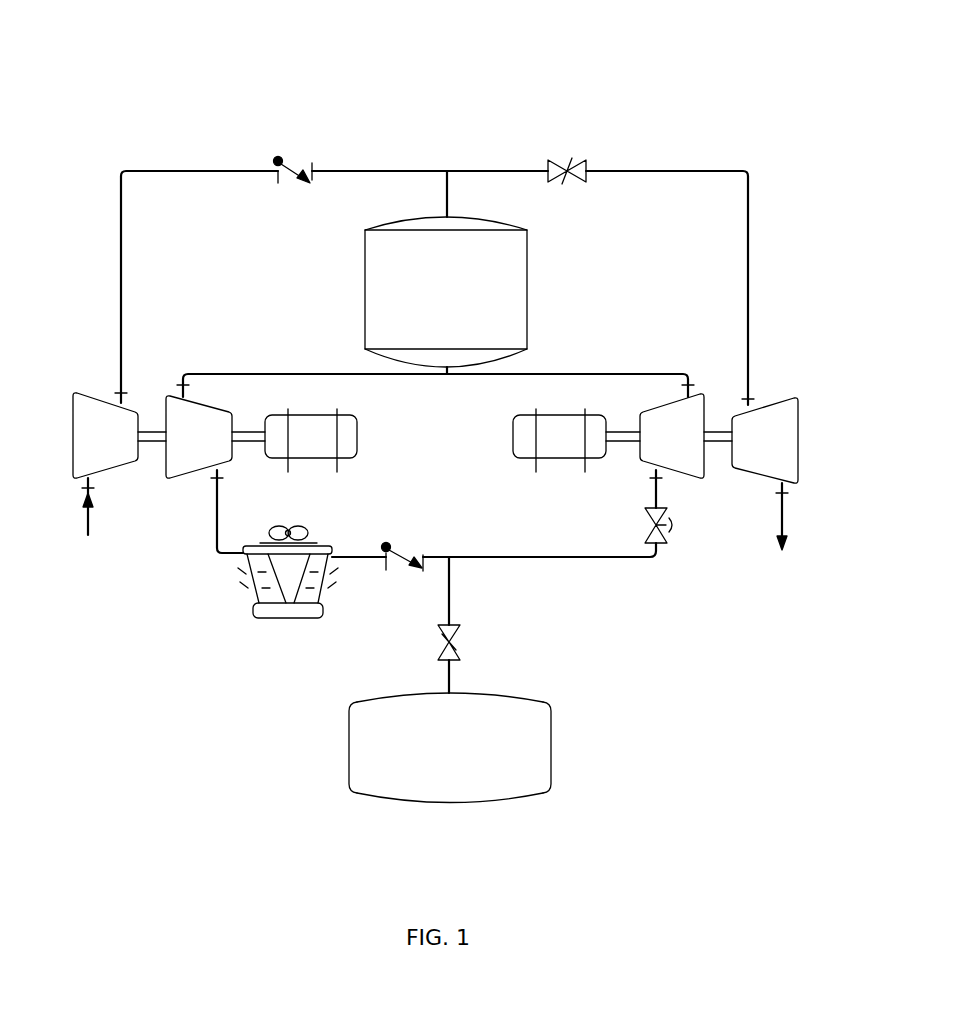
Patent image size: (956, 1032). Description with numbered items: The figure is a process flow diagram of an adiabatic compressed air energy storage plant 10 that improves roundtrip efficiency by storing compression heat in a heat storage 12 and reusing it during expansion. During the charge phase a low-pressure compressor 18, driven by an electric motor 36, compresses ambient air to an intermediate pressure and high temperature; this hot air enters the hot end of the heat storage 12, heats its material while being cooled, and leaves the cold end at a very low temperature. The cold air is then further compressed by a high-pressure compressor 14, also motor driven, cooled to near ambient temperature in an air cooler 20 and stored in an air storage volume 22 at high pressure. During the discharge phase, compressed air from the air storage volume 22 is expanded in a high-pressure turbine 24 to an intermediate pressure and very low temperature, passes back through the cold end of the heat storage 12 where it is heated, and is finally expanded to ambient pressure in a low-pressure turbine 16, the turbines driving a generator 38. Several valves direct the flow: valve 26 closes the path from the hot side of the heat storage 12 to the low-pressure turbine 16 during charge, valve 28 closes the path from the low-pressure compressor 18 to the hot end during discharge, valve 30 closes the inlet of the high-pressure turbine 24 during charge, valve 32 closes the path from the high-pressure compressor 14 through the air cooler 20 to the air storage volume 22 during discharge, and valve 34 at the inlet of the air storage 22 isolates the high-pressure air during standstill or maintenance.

The CAES plant 10 is at (524, 68).
The heat storage 12 is at (427, 303).
The high-pressure compressor 14 is at (188, 449).
The low-pressure turbine 16 is at (752, 454).
The low-pressure compressor 18 is at (95, 449).
The air cooler 20 is at (243, 570).
The air storage volume 22 is at (423, 764).
The high-pressure turbine 24 is at (661, 451).
The valve 26 is at (580, 163).
The valve 28 is at (292, 160).
The valve 30 is at (668, 542).
The valve 32 is at (397, 550).
The valve 34 is at (460, 628).
The electric motor 36 is at (300, 449).
The generator 38 is at (551, 451).